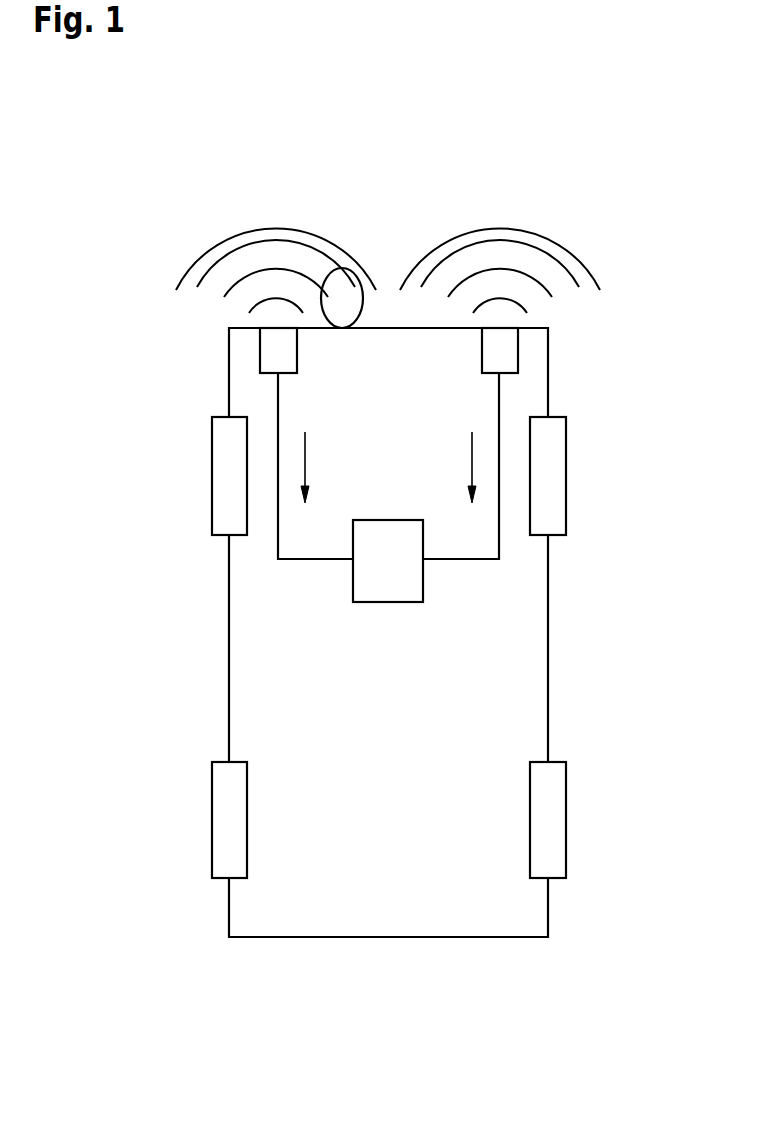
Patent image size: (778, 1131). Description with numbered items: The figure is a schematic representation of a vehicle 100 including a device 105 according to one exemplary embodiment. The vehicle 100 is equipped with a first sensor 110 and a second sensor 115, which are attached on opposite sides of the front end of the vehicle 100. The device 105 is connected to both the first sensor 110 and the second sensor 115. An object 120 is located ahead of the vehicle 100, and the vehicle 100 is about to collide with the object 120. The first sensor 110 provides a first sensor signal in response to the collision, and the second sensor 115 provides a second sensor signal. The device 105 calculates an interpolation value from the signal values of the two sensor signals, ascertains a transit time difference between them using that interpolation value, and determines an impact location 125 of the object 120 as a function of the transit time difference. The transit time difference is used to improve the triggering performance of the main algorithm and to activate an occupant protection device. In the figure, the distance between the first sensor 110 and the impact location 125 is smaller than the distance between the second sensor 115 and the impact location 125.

The vehicle 100 is at (548, 382).
The device 105 is at (388, 590).
The first sensor 110 is at (270, 352).
The second sensor 115 is at (507, 349).
The object 120 is at (362, 295).
The impact location 125 is at (342, 334).